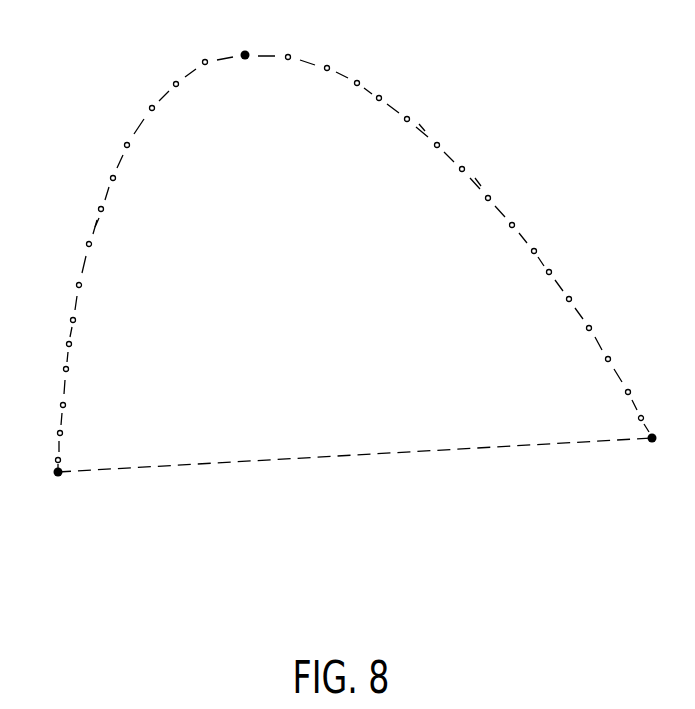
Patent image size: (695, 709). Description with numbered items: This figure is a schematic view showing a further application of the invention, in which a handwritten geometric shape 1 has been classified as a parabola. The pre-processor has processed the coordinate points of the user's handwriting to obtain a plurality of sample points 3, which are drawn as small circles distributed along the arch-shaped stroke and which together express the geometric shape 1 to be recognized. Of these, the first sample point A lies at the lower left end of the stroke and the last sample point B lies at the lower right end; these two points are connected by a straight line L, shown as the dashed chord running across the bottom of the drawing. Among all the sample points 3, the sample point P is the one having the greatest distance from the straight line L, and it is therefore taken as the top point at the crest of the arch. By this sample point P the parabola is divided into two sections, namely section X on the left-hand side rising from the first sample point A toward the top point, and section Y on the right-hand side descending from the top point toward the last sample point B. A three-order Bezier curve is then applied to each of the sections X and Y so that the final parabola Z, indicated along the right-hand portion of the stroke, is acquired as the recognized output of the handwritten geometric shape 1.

The geometric figure 1 is at (138, 100).
The sample points 3 is at (175, 82).
The sample point (top point) P is at (243, 37).
The first sample point A is at (58, 491).
The last sample point B is at (658, 456).
The straight line L is at (415, 453).
The section X is at (98, 222).
The section Y is at (478, 182).
The final parabola Z is at (422, 127).